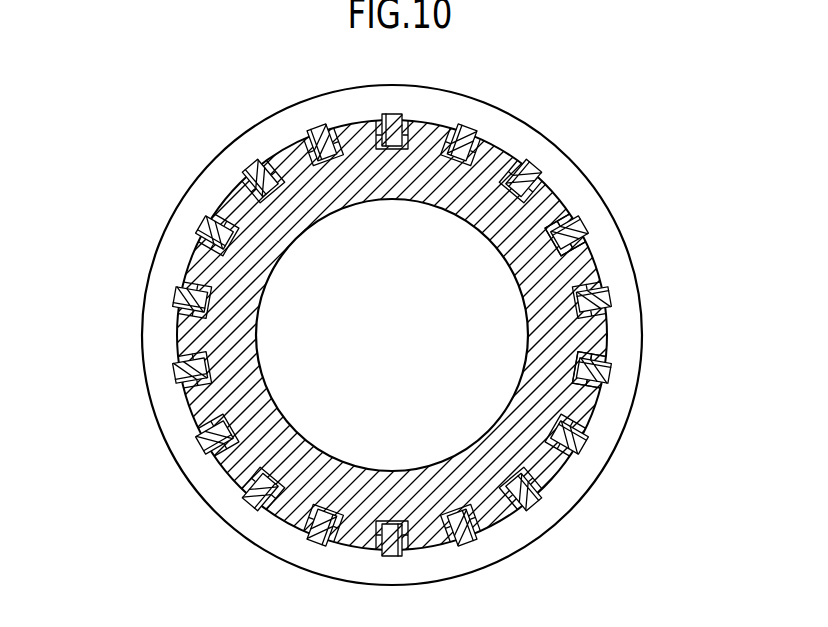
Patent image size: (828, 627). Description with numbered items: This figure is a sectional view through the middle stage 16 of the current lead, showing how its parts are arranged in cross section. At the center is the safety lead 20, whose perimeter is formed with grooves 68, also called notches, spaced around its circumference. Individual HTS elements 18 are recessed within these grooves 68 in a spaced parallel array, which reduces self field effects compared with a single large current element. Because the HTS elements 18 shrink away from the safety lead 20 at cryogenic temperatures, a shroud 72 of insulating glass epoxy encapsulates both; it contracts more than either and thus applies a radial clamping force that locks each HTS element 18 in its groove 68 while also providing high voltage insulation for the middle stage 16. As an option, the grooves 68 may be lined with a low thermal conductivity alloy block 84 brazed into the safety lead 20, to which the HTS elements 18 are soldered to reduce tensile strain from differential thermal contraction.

The middle stage 16 is at (136, 399).
The HTS elements 18 is at (323, 121).
The safety lead 20 is at (443, 198).
The grooves 68 is at (444, 124).
The shroud 72 is at (548, 135).
The alloy block 84 is at (588, 282).